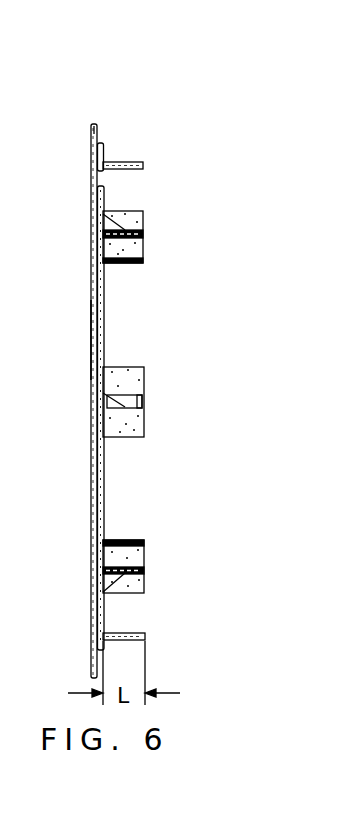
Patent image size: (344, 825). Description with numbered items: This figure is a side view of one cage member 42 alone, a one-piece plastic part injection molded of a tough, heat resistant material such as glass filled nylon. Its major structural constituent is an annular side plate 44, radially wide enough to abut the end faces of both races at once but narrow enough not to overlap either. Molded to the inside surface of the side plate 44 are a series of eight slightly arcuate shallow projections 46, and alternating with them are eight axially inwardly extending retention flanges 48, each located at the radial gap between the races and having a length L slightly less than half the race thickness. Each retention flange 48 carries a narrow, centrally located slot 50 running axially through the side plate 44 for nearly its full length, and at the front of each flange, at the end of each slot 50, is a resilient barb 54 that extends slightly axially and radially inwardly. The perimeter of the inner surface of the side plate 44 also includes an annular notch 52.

The cage member 42 is at (92, 158).
The annular side plate 44 is at (92, 340).
The arcuate shallow projections 46 is at (105, 311).
The retention flange 48 is at (122, 160).
The slot 50 is at (103, 214).
The annular notch 52 is at (98, 134).
The barb 54 is at (137, 170).